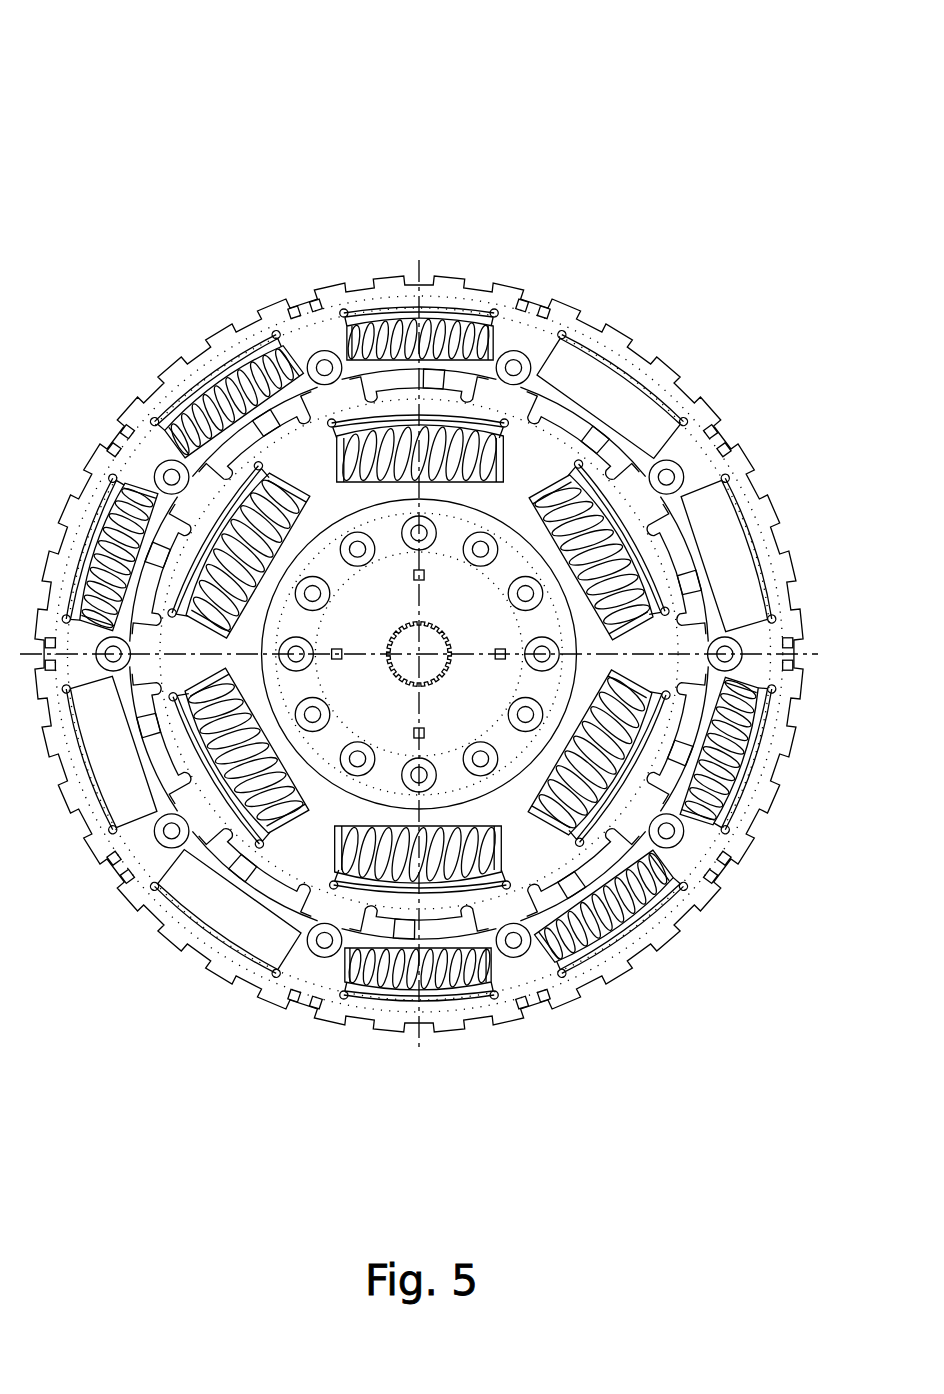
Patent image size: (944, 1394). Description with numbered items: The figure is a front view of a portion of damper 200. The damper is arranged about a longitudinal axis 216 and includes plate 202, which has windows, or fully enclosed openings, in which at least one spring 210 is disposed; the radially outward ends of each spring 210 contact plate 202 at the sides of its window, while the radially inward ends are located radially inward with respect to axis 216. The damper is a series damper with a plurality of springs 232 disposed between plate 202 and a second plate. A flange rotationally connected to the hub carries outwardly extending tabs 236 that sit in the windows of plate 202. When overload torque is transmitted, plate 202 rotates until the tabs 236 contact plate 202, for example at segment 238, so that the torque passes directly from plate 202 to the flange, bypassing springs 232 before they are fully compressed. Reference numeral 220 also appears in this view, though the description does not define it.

The damper 200 is at (747, 112).
The plate 202 is at (533, 455).
The spring 210 is at (727, 800).
The longitudinal axis 216 is at (428, 653).
The cover plate 220 is at (303, 340).
The spring 232 is at (585, 527).
The tab 236 is at (692, 578).
The segment 238 is at (345, 377).